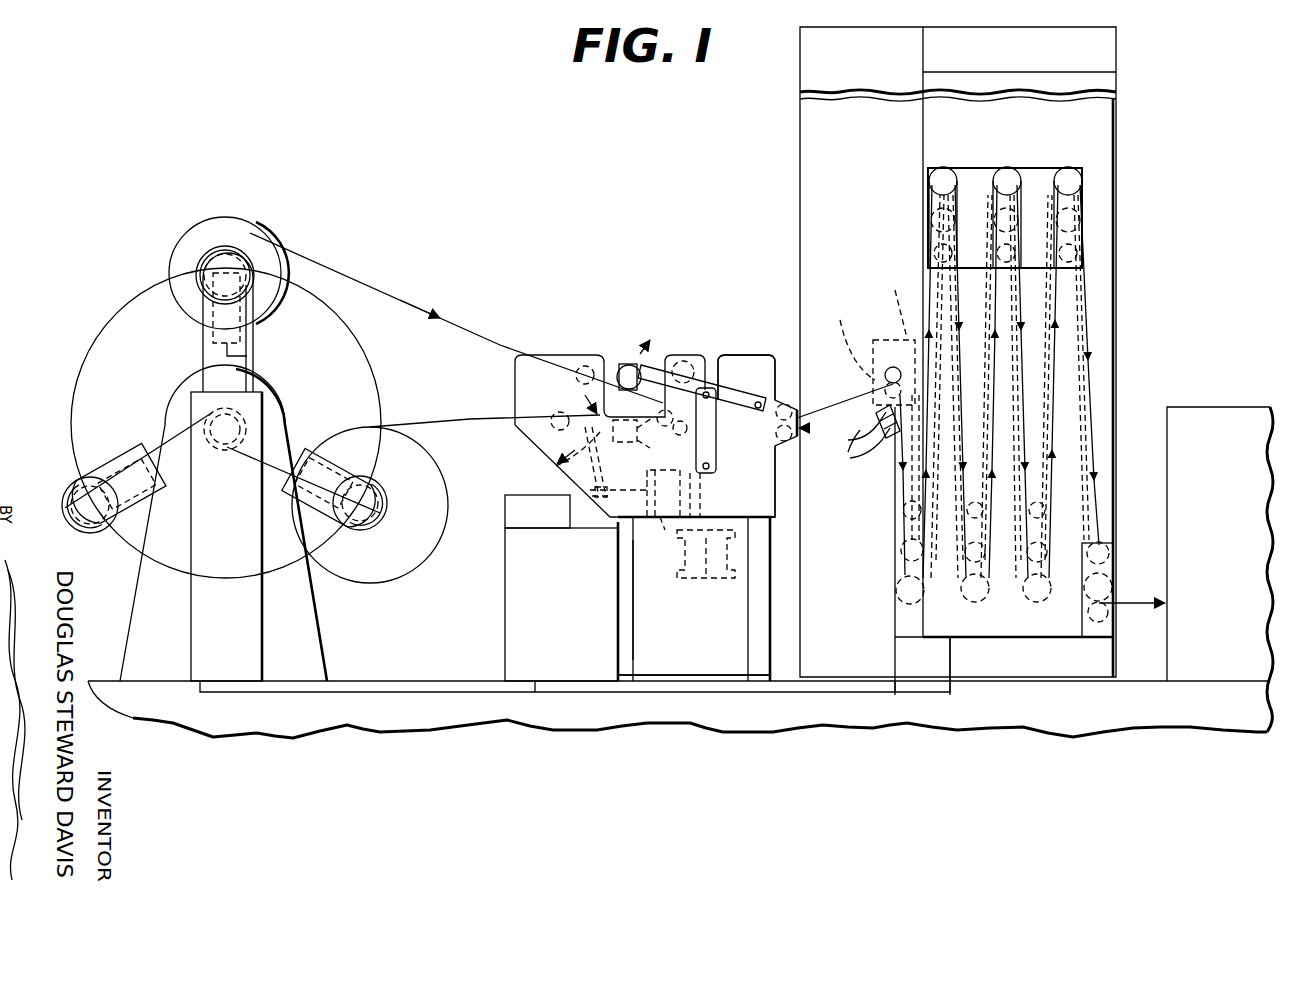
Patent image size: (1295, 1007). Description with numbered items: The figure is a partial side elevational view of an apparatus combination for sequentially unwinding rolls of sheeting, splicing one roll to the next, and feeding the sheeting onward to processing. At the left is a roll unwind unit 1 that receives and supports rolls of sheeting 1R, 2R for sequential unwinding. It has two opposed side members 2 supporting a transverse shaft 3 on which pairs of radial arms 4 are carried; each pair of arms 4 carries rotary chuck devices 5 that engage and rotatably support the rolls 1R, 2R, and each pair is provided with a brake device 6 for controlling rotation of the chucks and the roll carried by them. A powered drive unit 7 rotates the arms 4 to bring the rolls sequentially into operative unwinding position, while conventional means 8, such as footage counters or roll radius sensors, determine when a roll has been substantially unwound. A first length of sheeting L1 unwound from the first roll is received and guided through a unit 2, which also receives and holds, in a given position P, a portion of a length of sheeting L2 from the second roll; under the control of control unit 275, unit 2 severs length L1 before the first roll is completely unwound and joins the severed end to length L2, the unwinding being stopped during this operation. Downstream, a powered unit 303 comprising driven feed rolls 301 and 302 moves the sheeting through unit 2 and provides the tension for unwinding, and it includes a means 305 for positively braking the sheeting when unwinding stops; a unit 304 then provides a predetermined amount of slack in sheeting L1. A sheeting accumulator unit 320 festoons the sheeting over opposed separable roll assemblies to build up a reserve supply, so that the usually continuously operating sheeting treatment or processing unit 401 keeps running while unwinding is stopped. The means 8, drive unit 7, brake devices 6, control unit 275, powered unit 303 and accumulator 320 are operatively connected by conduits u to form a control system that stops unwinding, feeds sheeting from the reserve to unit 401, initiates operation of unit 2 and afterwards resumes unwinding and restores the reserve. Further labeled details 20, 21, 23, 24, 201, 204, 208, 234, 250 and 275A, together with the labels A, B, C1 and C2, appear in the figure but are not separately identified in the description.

The roll unwind unit 1 is at (82, 305).
The roll of sheeting 1R is at (226, 232).
The cutting and bonding unit 2 is at (170, 651).
The roll of sheeting 2R is at (390, 580).
The transverse shaft 3 is at (222, 450).
The radial arms 4 is at (203, 356).
The rotary chuck devices 5 is at (238, 257).
The brake device 6 is at (213, 335).
The powered drive unit 7 is at (262, 605).
The roll depletion sensing means 8 is at (206, 272).
The conduits u is at (247, 382).
The first length of sheeting L1 is at (393, 297).
The second length of sheeting L2 is at (467, 418).
The control unit base 20 is at (702, 676).
The control unit housing 21 is at (756, 640).
The splicer frame 23 is at (749, 493).
The guide roller 24 is at (578, 375).
The splicer housing block 201 is at (742, 390).
The pivot arm 204 is at (714, 446).
The splice roller 208 is at (643, 350).
The linkage arc 234 is at (548, 445).
The actuator linkage 250 is at (572, 470).
The control unit 275 is at (578, 625).
The control panel 275A is at (537, 511).
The driven feed roll 301 is at (890, 340).
The driven feed roll 302 is at (846, 338).
The powered unit 303 is at (884, 302).
The slack providing unit 304 is at (713, 360).
The sheeting braking means 305 is at (872, 460).
The sheeting accumulator unit 320 is at (905, 618).
The sheeting processing unit 401 is at (1172, 402).
The pivot point A is at (707, 410).
The pivot point B is at (668, 436).
The holding position P is at (583, 401).
The cylinder C1 is at (706, 580).
The cylinder C2 is at (653, 541).